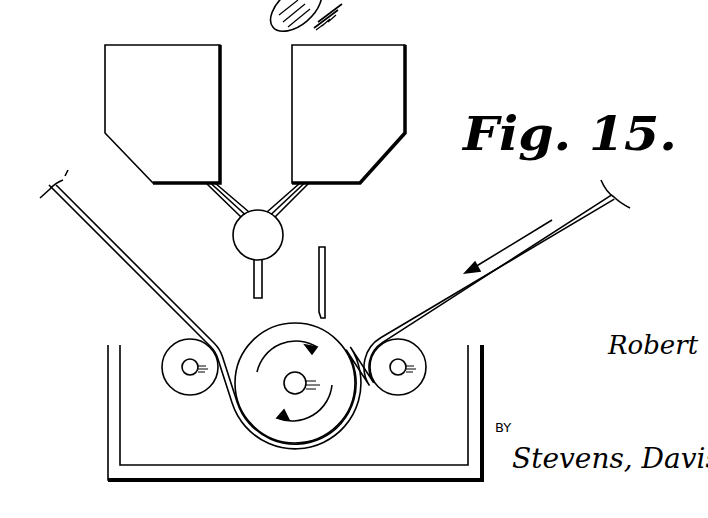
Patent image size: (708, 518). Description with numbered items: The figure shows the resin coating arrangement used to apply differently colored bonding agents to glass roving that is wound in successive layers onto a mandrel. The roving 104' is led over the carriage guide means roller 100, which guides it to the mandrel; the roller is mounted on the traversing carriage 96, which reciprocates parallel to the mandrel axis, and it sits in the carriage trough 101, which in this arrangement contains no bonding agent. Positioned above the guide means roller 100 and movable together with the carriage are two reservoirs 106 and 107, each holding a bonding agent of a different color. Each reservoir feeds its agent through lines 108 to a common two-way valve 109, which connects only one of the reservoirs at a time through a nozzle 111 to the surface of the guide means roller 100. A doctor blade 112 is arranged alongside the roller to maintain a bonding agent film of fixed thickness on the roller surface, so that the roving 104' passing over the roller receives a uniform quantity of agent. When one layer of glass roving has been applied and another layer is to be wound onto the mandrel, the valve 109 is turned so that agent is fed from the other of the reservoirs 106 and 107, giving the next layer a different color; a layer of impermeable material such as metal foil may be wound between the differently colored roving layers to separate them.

The traversing carriage 96 is at (482, 382).
The guide means roller 100 is at (330, 343).
The trough 101 is at (445, 357).
The roving 104' is at (335, 309).
The reservoir 106 is at (122, 55).
The reservoir 107 is at (406, 74).
The lines 108 is at (287, 203).
The two-way valve 109 is at (233, 242).
The nozzle 111 is at (253, 284).
The doctor blade 112 is at (326, 270).